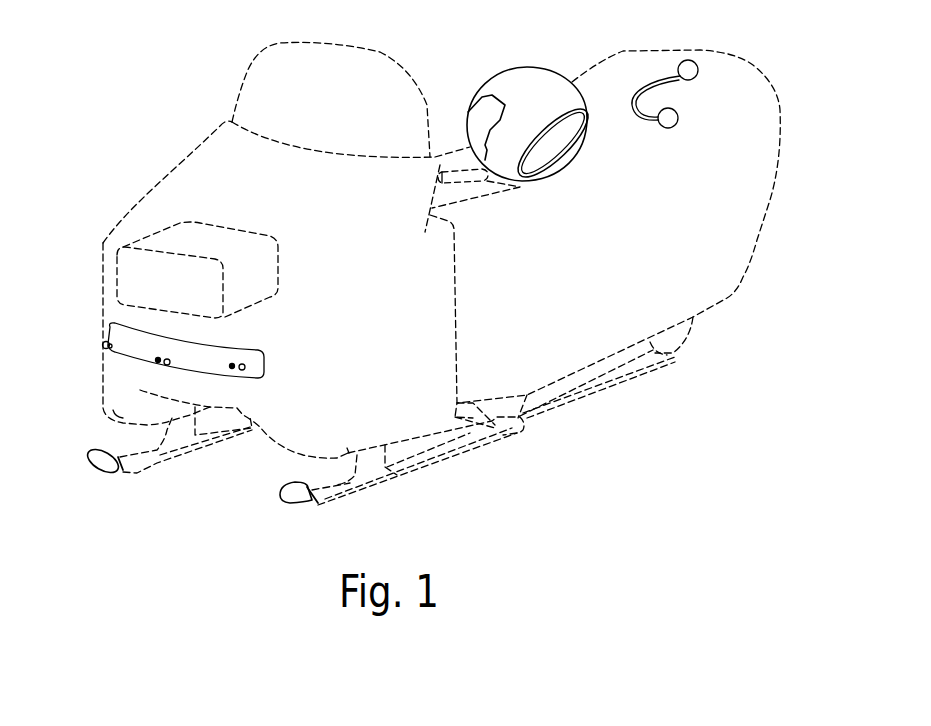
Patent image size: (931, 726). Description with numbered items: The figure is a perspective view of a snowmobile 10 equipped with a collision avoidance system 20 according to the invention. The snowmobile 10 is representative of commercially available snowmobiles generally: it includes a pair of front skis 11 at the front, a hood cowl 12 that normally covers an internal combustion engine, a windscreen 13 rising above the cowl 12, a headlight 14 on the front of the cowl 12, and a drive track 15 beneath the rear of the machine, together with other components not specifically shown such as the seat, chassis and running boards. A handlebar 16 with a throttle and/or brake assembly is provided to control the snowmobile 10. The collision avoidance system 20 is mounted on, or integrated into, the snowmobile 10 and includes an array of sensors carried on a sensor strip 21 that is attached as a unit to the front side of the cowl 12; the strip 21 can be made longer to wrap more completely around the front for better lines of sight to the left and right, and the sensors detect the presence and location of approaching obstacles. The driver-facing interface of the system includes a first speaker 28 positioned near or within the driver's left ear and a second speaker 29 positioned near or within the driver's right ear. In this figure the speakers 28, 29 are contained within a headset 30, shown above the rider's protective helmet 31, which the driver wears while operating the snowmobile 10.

The snowmobile 10 is at (173, 572).
The front skis 11 is at (293, 495).
The hood cowl 12 is at (203, 163).
The windscreen 13 is at (327, 65).
The headlight 14 is at (130, 278).
The drive track 15 is at (627, 360).
The handlebar 16 is at (453, 170).
The collision avoidance system 20 is at (133, 350).
The sensor strip 21 is at (113, 333).
The first speaker 28 is at (690, 72).
The second speaker 29 is at (668, 118).
The headset 30 is at (647, 82).
The protective helmet 31 is at (520, 83).